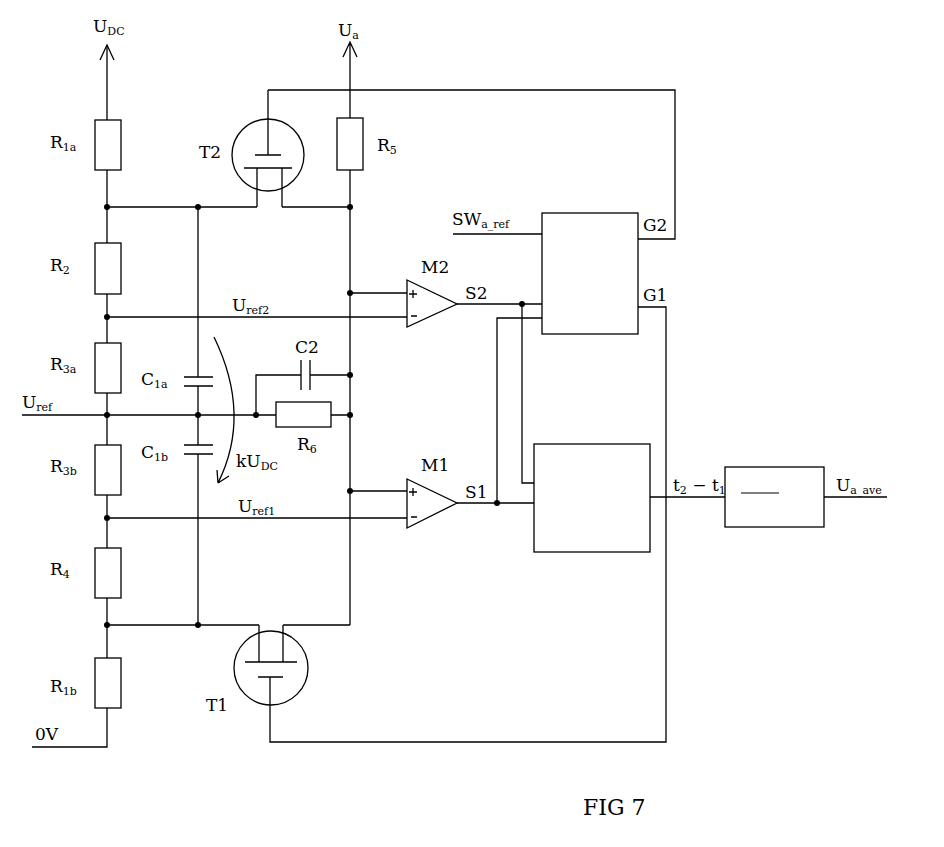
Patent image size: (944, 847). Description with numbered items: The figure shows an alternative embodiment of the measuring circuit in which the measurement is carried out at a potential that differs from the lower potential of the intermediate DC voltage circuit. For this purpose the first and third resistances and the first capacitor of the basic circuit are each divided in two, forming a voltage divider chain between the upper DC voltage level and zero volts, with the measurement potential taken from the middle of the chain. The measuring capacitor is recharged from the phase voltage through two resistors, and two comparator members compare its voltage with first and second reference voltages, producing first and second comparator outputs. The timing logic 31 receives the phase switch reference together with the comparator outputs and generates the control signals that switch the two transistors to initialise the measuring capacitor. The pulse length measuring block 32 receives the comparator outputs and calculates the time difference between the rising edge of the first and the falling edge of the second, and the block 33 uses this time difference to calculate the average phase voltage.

The timing logic 31 is at (577, 213).
The pulse length measuring block 32 is at (594, 556).
The block calculating average phase voltage 33 is at (750, 467).